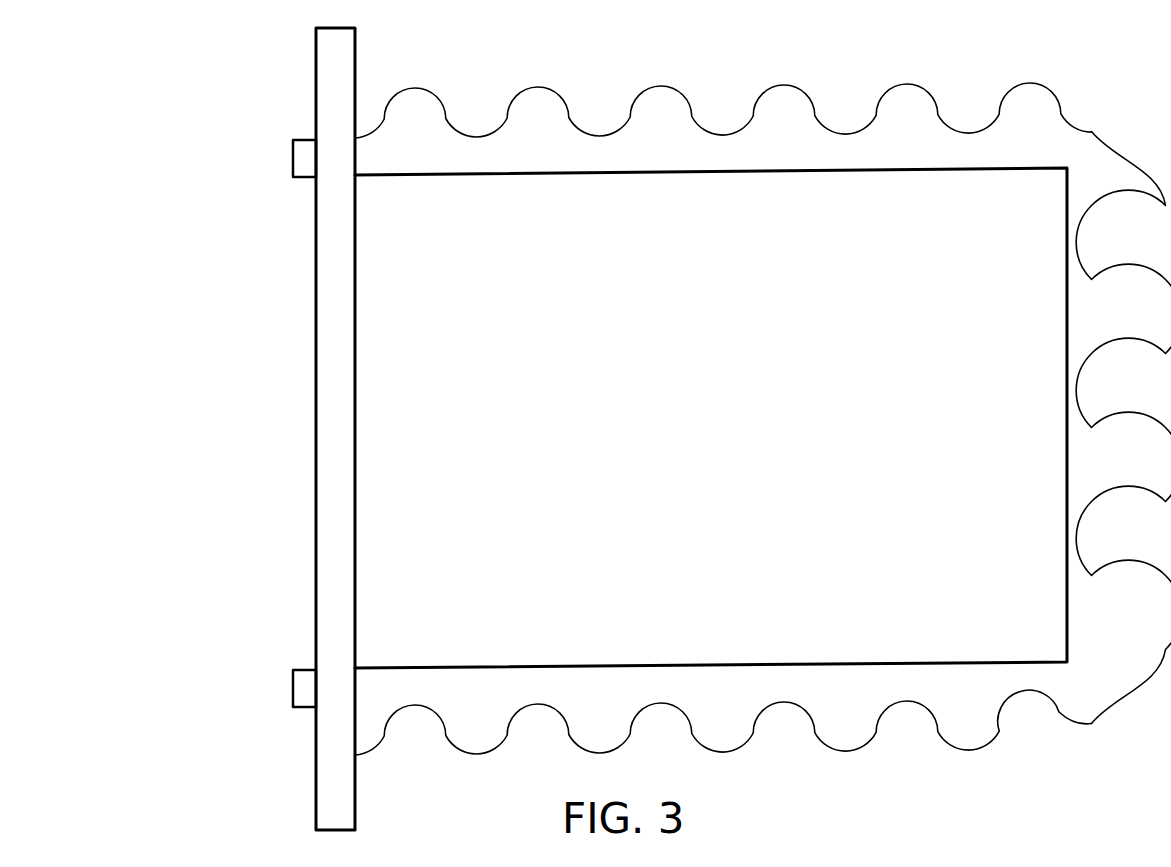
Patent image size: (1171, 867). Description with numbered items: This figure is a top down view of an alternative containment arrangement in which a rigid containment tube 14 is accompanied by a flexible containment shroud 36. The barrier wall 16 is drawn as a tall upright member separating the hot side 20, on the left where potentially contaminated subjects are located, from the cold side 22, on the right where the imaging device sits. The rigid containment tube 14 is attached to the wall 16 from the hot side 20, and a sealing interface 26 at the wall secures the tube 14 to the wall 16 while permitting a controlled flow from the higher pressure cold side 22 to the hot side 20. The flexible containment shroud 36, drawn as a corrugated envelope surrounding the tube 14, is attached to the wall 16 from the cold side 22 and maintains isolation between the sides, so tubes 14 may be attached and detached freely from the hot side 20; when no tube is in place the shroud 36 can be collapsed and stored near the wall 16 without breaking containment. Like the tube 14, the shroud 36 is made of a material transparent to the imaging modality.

The containment tube 14 is at (824, 663).
The barrier wall 16 is at (355, 88).
The hot side 20 is at (60, 683).
The cold side 22 is at (1045, 30).
The sealing interface 26 is at (293, 151).
The flexible containment shroud 36 is at (783, 85).